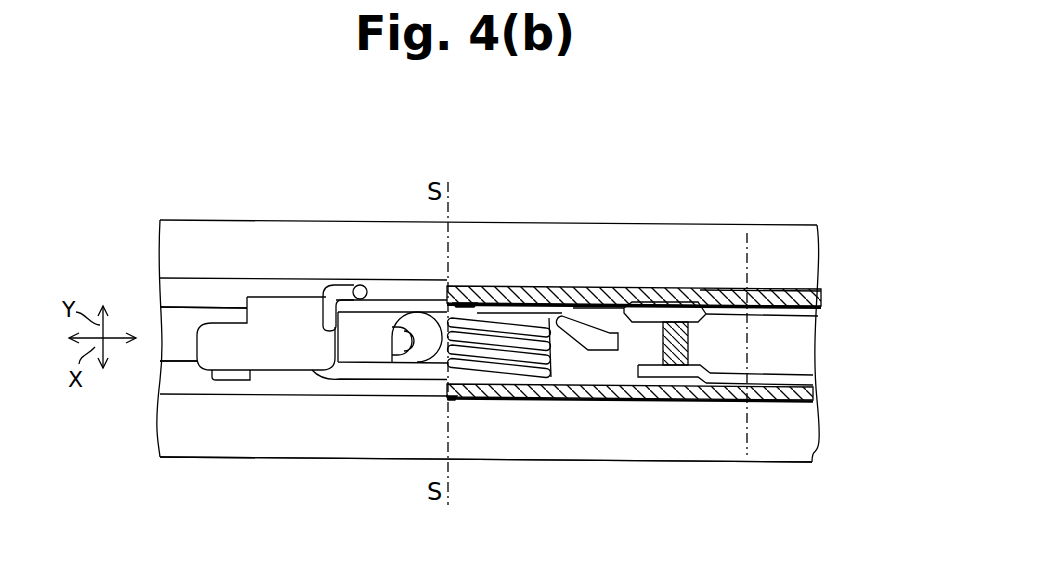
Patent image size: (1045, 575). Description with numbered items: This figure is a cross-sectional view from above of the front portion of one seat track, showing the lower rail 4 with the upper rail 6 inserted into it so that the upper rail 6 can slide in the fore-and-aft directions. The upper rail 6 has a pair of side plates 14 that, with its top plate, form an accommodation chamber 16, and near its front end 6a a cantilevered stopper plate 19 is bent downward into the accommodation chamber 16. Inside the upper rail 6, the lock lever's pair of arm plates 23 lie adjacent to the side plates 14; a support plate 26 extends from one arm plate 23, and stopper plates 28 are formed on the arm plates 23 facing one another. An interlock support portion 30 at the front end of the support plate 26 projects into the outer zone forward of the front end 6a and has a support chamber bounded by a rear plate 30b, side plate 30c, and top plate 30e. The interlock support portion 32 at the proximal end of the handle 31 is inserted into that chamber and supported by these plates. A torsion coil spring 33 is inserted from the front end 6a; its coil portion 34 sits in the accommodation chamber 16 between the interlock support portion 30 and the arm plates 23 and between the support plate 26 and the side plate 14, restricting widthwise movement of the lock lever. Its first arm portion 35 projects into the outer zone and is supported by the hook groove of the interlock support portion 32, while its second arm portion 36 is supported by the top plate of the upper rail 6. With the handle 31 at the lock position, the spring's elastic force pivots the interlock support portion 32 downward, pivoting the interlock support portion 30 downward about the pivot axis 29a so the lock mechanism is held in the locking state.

The lower rail 4 is at (514, 467).
The upper rail 6 is at (518, 277).
The front end 6a is at (450, 286).
The side plates 14 is at (789, 289).
The accommodation chamber 16 is at (604, 372).
The stopper plate 19 is at (677, 348).
The arm plates 23 is at (717, 310).
The support plate 26 is at (569, 311).
The stopper plate 28 is at (660, 318).
The pivot axis 29a is at (747, 329).
The interlock support portion 30 is at (284, 372).
The rear plate 30b is at (400, 355).
The side plate 30c is at (229, 381).
The top plate 30e is at (286, 311).
The handle 31 is at (181, 322).
The interlock support portion 32 is at (375, 328).
The torsion coil spring 33 is at (552, 388).
The coil portion 34 is at (549, 353).
The first arm portion 35 is at (352, 379).
The second arm portion 36 is at (613, 337).